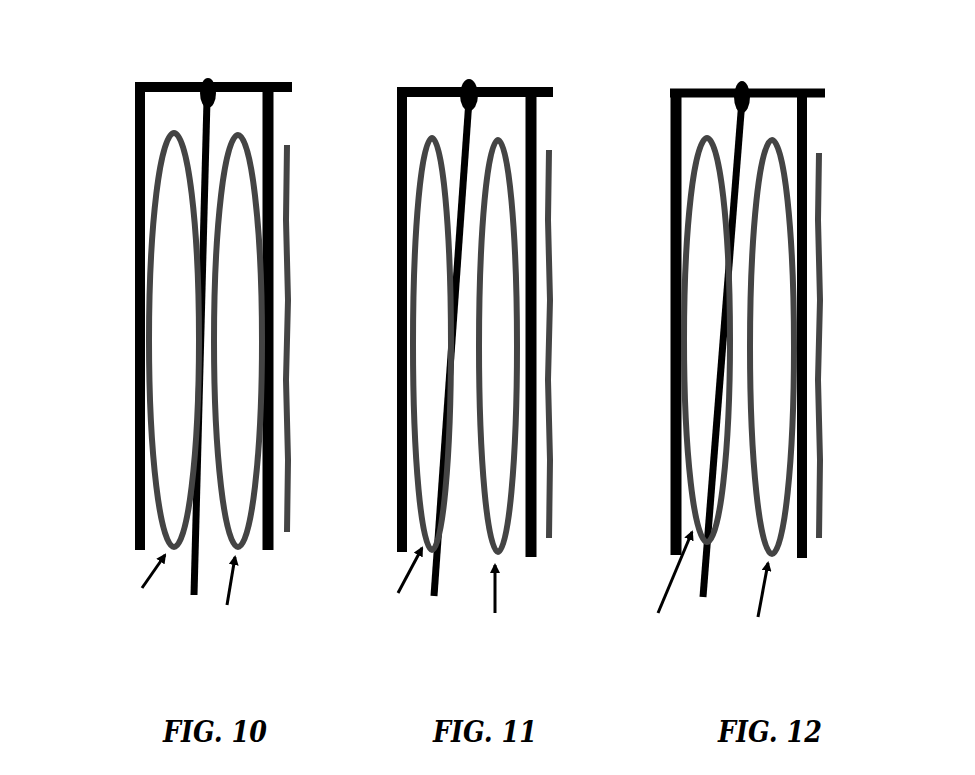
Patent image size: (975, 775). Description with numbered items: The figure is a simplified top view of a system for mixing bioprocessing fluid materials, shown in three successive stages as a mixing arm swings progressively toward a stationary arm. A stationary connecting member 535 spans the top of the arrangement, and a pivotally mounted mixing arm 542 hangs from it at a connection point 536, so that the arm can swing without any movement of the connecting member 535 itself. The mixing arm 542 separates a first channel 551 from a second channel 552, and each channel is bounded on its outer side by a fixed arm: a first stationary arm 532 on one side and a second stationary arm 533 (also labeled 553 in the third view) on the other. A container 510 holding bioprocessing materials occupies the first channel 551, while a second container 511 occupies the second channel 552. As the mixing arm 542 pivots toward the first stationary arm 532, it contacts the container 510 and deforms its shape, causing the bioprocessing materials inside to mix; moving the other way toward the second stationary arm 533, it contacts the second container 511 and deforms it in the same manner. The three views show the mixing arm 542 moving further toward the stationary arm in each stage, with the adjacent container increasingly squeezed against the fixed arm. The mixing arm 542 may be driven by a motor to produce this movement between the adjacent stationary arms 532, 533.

In FIG. 10, the container 510 is at (165, 328).
In FIG. 11, the container 510 is at (427, 295).
In FIG. 12, the container 510 is at (697, 313).
In FIG. 10, the second container 511 is at (238, 322).
In FIG. 11, the second container 511 is at (493, 285).
In FIG. 12, the second container 511 is at (772, 307).
In FIG. 10, the first stationary arm 532 is at (137, 550).
In FIG. 11, the first stationary arm 532 is at (407, 553).
In FIG. 12, the first stationary arm 532 is at (675, 557).
In FIG. 10, the second stationary arm 533 is at (267, 550).
In FIG. 11, the second stationary arm 533 is at (528, 557).
In FIG. 12, the second side wall 553 is at (800, 558).
In FIG. 10, the connecting member 535 is at (227, 83).
In FIG. 11, the connecting member 535 is at (488, 88).
In FIG. 12, the connecting member 535 is at (775, 87).
In FIG. 10, the connection point 536 is at (202, 78).
In FIG. 11, the connection point 536 is at (463, 82).
In FIG. 12, the connection point 536 is at (735, 83).
In FIG. 10, the mixing arm 542 is at (192, 595).
In FIG. 11, the mixing arm 542 is at (433, 587).
In FIG. 12, the mixing arm 542 is at (700, 597).
In FIG. 10, the first channel 551 is at (136, 584).
In FIG. 11, the first channel 551 is at (401, 583).
In FIG. 12, the first channel 551 is at (658, 584).
In FIG. 10, the second channel 552 is at (236, 601).
In FIG. 11, the second channel 552 is at (501, 605).
In FIG. 12, the second channel 552 is at (764, 608).